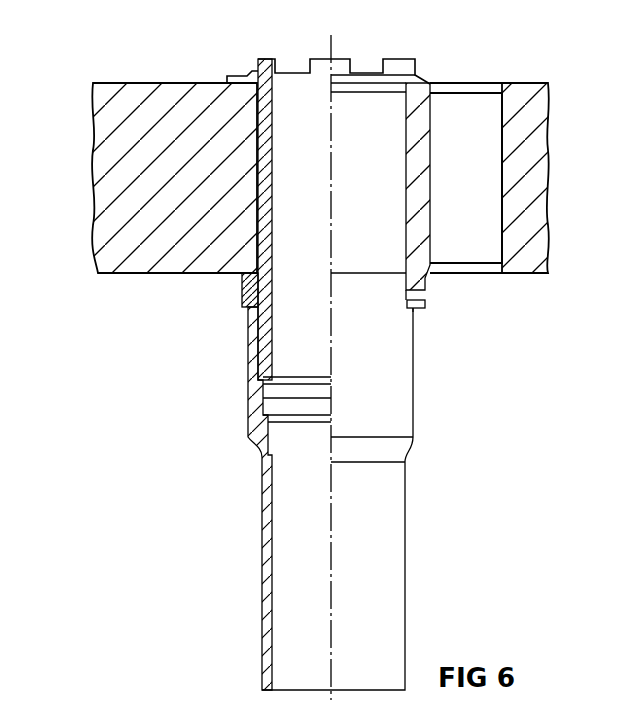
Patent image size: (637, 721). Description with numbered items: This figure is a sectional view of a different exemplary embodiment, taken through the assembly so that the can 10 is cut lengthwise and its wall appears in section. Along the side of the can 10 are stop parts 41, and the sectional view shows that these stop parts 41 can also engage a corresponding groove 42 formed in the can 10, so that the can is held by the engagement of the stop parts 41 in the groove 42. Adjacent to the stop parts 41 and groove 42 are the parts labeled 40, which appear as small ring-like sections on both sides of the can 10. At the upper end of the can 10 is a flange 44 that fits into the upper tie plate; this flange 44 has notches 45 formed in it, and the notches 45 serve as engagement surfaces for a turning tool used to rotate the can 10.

The can 10 is at (415, 396).
The sealing ring 40 is at (242, 292).
The stop parts 41 is at (426, 289).
The groove 42 is at (408, 309).
The flange 44 is at (248, 61).
The notches 45 is at (362, 68).